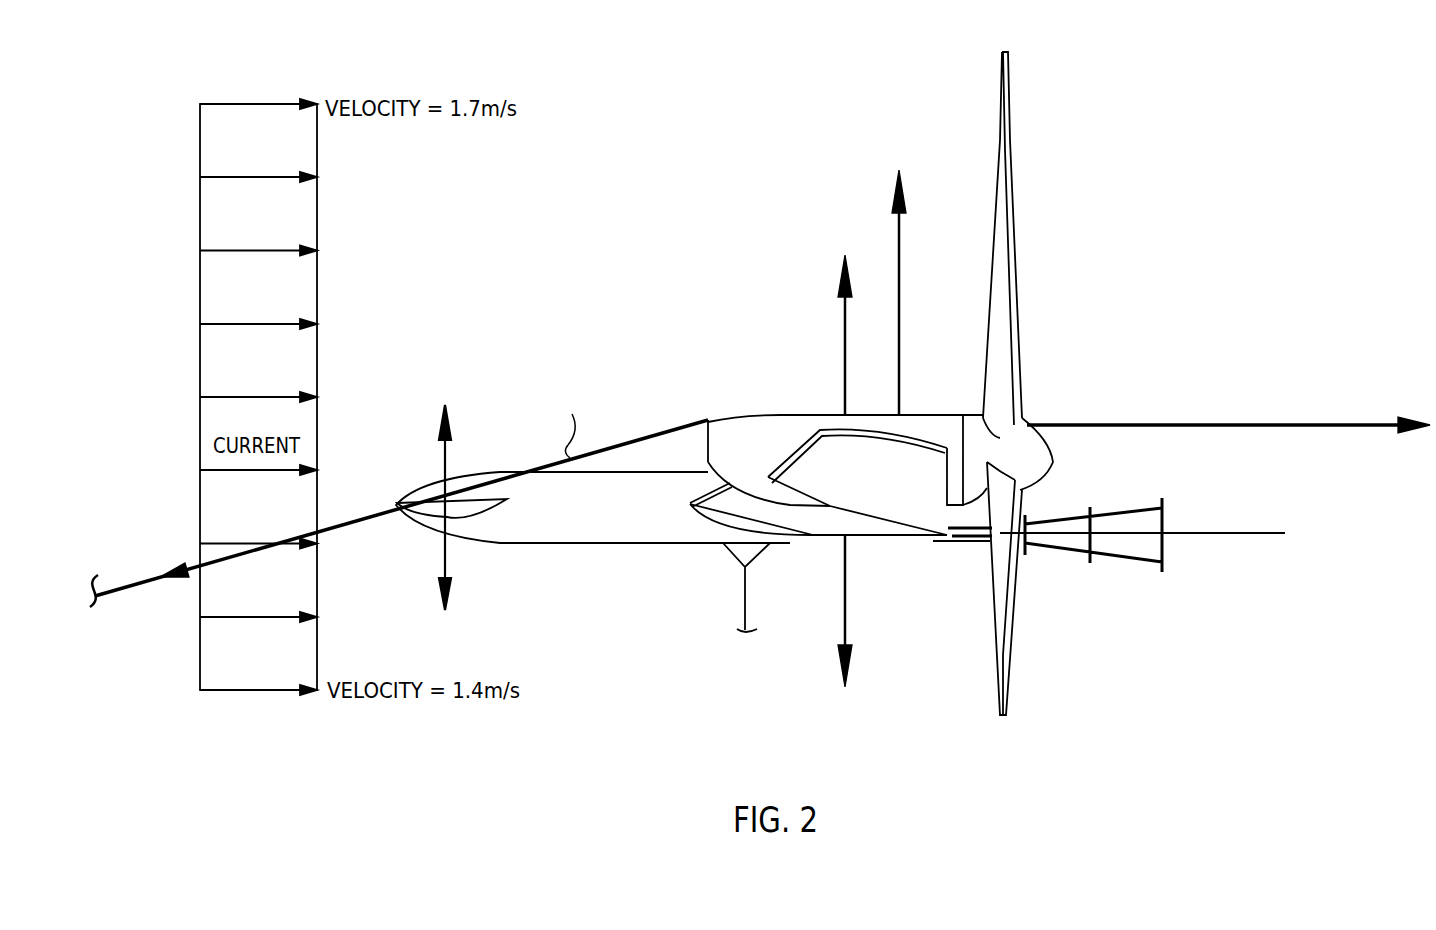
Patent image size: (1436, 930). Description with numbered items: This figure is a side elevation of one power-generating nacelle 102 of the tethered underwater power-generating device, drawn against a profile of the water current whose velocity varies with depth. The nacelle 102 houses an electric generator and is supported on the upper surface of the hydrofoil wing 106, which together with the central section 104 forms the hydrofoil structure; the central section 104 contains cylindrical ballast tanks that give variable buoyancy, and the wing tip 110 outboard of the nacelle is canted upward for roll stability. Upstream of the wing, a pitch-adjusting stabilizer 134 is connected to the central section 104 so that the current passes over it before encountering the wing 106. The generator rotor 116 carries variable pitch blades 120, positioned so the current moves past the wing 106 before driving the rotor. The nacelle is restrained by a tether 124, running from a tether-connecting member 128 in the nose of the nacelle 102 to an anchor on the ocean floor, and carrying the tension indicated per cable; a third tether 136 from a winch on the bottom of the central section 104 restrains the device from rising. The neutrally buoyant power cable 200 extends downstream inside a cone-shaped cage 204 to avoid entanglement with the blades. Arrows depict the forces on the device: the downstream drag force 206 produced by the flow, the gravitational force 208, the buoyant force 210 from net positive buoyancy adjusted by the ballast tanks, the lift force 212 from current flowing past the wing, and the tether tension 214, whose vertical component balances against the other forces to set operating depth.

The nacelle 102 is at (797, 423).
The central section 104 is at (585, 543).
The wing 106 is at (708, 512).
The wing tip 110 is at (950, 541).
The rotor 116 is at (1035, 455).
The variable pitch blade 120 is at (1000, 652).
The tether 124 is at (180, 565).
The tether-connecting member 128 is at (718, 423).
The pitch-adjusting stabilizer 134 is at (417, 515).
The third tether 136 is at (745, 605).
The tail axis 200 is at (1222, 532).
The tail assembly 204 is at (1165, 555).
The drag force 206 is at (1300, 422).
The gravitational force 208 is at (843, 632).
The buoyant force 210 is at (904, 195).
The lift force 212 is at (840, 290).
The tension force 214 is at (118, 586).